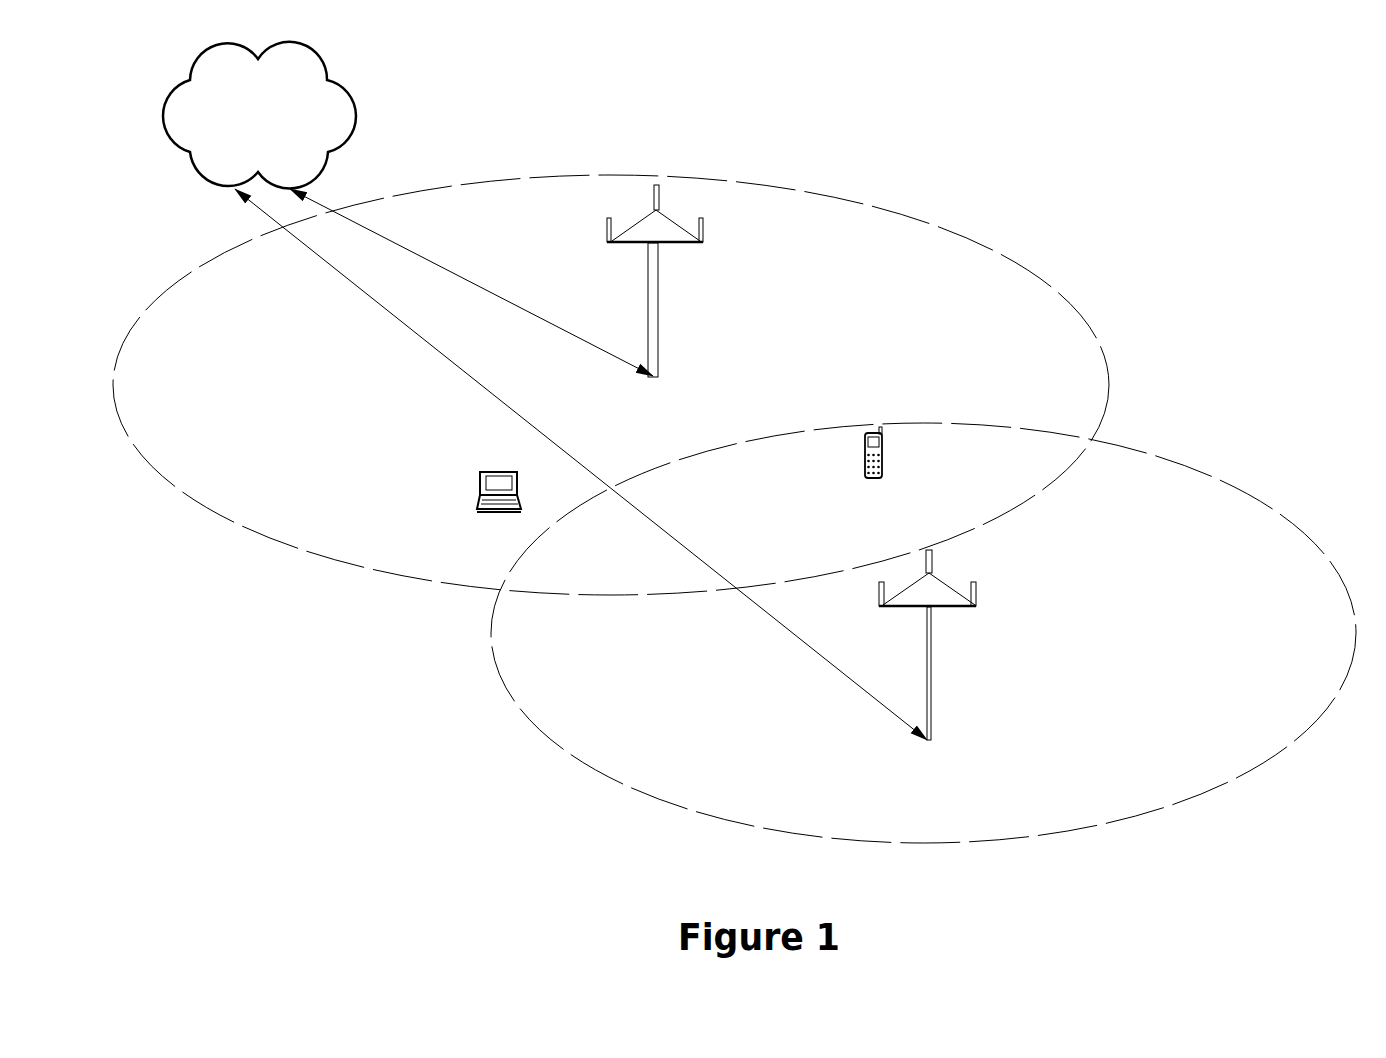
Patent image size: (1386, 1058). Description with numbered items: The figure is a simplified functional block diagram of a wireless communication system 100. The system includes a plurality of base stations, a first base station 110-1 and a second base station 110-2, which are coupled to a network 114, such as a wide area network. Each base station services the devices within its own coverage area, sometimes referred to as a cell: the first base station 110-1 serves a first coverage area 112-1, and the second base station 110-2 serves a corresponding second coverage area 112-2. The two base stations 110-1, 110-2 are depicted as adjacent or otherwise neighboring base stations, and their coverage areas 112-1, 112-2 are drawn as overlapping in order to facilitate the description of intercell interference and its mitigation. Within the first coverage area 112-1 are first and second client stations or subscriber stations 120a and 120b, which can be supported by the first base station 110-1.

The wireless communication system 100 is at (262, 765).
The network 114 is at (362, 65).
The first base station 110-1 is at (708, 343).
The second base station 110-2 is at (978, 708).
The first coverage area 112-1 is at (470, 586).
The second coverage area 112-2 is at (797, 830).
The first client station 120a is at (878, 480).
The second client station 120b is at (472, 488).